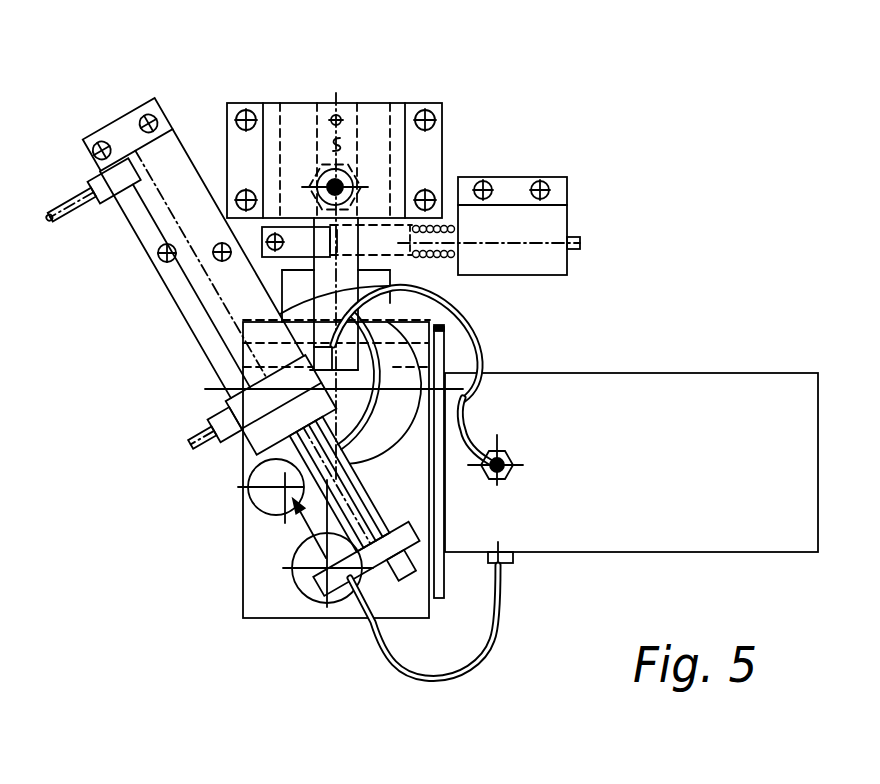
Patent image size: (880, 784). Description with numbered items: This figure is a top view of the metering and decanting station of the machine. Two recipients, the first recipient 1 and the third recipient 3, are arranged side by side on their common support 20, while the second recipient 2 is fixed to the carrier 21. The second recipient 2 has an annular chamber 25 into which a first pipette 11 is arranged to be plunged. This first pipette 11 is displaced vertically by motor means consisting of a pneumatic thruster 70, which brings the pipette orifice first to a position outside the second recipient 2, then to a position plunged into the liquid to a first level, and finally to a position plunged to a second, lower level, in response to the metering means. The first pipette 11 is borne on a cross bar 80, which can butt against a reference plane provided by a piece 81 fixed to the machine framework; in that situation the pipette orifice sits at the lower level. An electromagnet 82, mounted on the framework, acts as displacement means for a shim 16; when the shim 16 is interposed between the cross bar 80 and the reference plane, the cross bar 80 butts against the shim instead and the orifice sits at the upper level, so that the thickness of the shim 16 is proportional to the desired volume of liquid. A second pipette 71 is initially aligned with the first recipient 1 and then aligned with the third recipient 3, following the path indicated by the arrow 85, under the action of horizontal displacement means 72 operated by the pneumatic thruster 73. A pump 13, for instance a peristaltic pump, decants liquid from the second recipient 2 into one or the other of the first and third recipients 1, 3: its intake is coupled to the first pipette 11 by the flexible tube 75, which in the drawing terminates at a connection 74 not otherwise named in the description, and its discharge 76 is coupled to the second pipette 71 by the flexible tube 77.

The first recipient 1 is at (353, 595).
The second recipient 2 is at (378, 466).
The third recipient 3 is at (262, 523).
The first pipette 11 is at (375, 347).
The pump 13 is at (635, 517).
The shim 16 is at (377, 200).
The common support 20 is at (262, 586).
The carrier 21 is at (440, 380).
The annular chamber 25 is at (458, 402).
The pneumatic thruster 70 is at (352, 172).
The second pipette 71 is at (333, 600).
The horizontal displacement means 72 is at (205, 410).
The pneumatic thruster 73 is at (172, 298).
The cable connector 74 is at (517, 467).
The flexible tube 75 is at (465, 418).
The discharge 76 is at (515, 557).
The flexible tube 77 is at (440, 680).
The cross bar 80 is at (415, 275).
The piece 81 is at (303, 240).
The electromagnet 82 is at (550, 217).
The arrow 85 is at (300, 522).